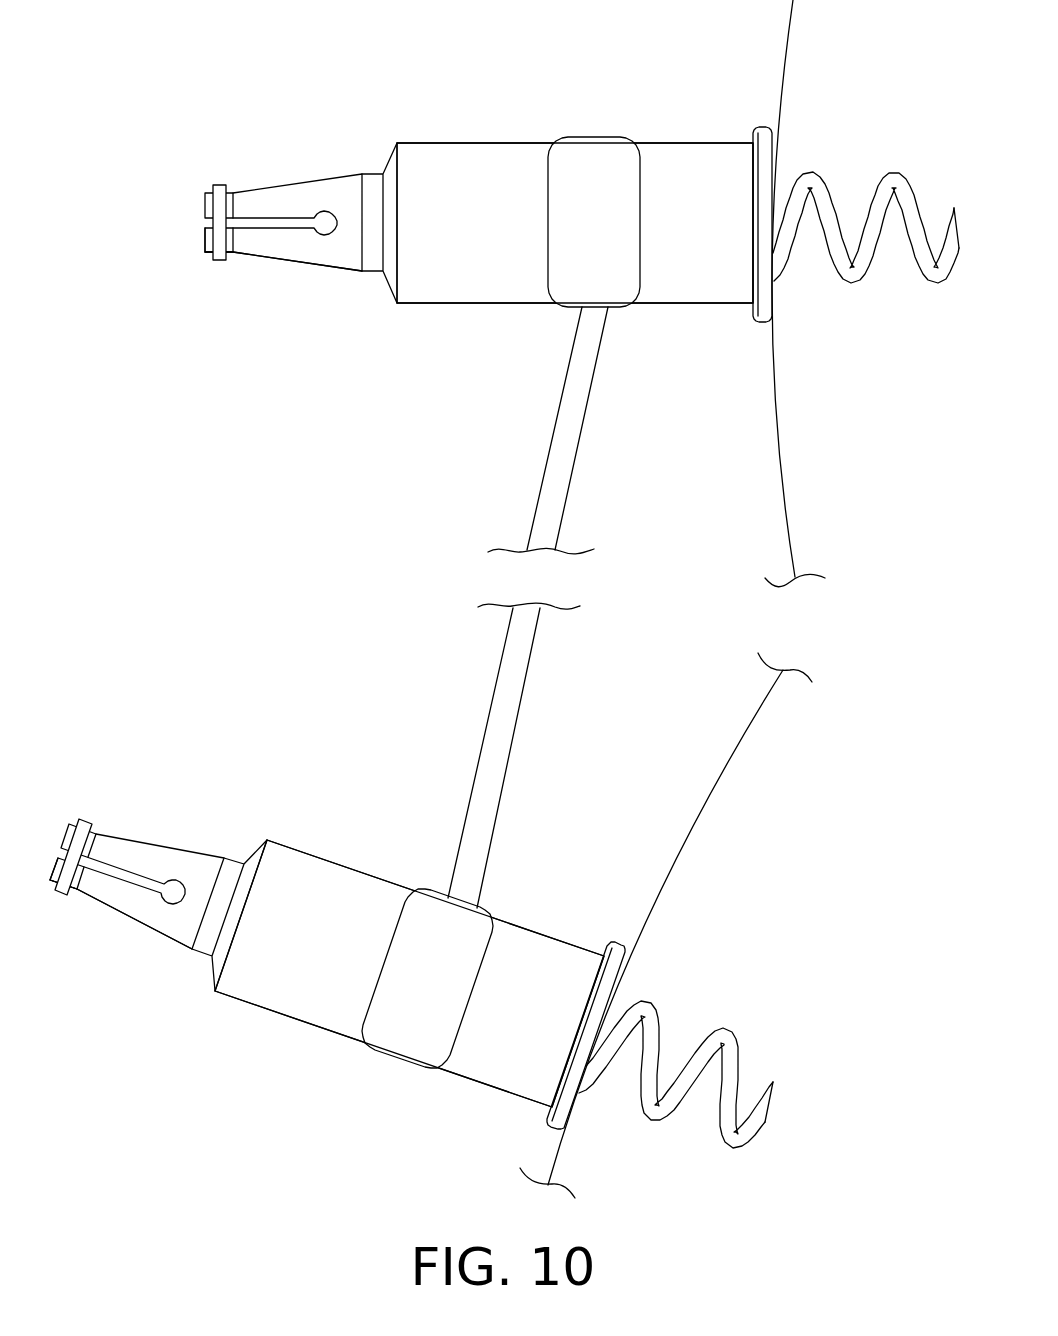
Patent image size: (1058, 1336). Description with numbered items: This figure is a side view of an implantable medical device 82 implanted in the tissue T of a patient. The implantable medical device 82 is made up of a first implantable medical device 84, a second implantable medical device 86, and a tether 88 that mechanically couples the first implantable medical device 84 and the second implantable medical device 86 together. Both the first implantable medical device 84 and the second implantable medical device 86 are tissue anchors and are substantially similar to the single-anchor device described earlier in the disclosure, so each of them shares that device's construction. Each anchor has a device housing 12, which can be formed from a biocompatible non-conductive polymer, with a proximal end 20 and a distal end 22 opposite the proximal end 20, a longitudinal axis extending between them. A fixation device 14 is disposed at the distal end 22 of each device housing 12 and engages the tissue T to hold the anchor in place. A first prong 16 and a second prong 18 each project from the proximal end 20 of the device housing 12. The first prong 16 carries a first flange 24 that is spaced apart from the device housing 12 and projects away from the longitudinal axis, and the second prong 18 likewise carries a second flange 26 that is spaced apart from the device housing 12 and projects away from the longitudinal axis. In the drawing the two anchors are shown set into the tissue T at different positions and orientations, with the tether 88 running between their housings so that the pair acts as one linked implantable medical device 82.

The device housing 12 is at (711, 315).
The fixation device 14 is at (893, 172).
The first prong 16 is at (264, 185).
The second prong 18 is at (270, 272).
The proximal end 20 is at (384, 170).
The distal end 22 is at (758, 127).
The first flange 24 is at (210, 190).
The second flange 26 is at (207, 256).
The implantable medical device 82 is at (292, 81).
The first implantable medical device 84 is at (496, 132).
The second implantable medical device 86 is at (340, 850).
The tether 88 is at (557, 445).
The tissue T is at (757, 0).